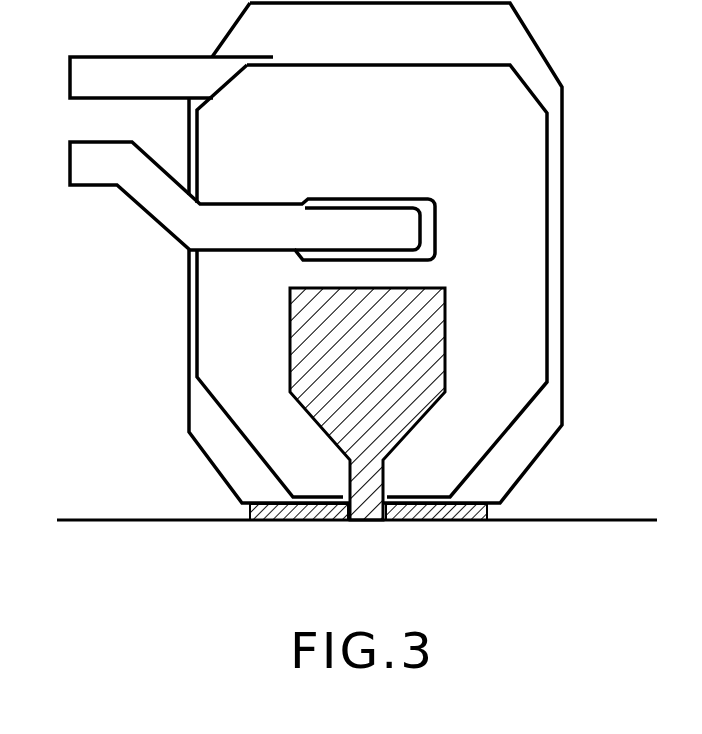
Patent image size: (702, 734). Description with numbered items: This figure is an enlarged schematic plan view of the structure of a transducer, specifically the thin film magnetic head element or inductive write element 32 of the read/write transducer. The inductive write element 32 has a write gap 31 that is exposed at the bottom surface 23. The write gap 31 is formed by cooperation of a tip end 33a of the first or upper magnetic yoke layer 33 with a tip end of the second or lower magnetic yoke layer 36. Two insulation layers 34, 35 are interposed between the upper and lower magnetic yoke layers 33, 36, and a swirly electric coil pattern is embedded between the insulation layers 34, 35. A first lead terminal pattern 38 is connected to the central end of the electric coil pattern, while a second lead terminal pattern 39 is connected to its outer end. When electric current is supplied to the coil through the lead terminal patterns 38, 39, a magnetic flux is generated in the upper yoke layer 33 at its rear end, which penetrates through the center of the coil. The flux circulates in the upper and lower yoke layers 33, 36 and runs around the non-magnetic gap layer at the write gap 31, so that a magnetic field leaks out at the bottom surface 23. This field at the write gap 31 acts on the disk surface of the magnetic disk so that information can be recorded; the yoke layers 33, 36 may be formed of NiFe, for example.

The bottom surface 23 is at (547, 523).
The write gap 31 is at (377, 537).
The inductive write element 32 is at (373, 291).
The upper magnetic yoke layer 33 is at (447, 365).
The tip end of upper magnetic yoke layer 33a is at (347, 523).
The insulation layer 34 is at (547, 315).
The insulation layer 35 is at (560, 392).
The lower magnetic yoke layer 36 is at (270, 522).
The first lead terminal pattern 38 is at (165, 228).
The second lead terminal pattern 39 is at (133, 57).